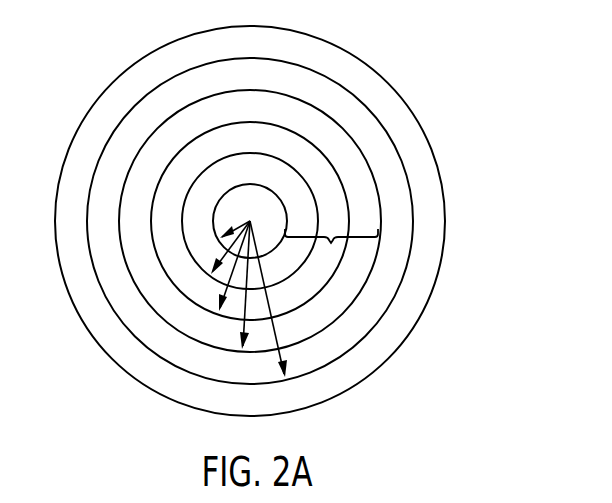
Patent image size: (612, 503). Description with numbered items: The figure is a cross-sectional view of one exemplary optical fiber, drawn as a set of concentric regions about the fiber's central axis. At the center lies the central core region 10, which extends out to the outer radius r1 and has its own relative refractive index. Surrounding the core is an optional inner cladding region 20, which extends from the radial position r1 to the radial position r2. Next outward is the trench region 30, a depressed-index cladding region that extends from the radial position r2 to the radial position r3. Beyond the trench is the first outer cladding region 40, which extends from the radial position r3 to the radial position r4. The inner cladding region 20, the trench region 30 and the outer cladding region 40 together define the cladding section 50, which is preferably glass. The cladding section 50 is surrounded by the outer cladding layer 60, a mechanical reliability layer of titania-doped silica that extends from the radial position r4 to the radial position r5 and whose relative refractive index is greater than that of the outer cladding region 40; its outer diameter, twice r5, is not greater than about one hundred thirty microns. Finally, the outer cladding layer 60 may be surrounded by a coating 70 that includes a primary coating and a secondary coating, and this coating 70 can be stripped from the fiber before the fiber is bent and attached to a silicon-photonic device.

The central core region 10 is at (268, 213).
The inner cladding region 20 is at (300, 213).
The trench region 30 is at (332, 213).
The outer cladding region 40 is at (363, 213).
The cladding section 50 is at (331, 250).
The outer cladding layer 60 is at (395, 216).
The coating 70 is at (427, 216).
The outer radius of core region r1 is at (237, 235).
The outer radius of inner cladding region r2 is at (218, 262).
The outer radius of trench region r3 is at (220, 305).
The outer radius of first outer cladding region r4 is at (246, 345).
The outer radius of second outer cladding region r5 is at (285, 375).